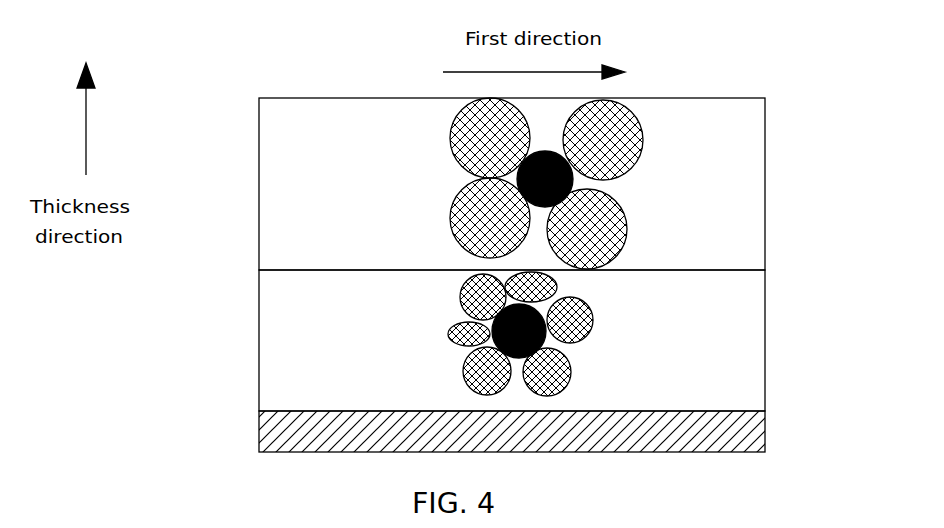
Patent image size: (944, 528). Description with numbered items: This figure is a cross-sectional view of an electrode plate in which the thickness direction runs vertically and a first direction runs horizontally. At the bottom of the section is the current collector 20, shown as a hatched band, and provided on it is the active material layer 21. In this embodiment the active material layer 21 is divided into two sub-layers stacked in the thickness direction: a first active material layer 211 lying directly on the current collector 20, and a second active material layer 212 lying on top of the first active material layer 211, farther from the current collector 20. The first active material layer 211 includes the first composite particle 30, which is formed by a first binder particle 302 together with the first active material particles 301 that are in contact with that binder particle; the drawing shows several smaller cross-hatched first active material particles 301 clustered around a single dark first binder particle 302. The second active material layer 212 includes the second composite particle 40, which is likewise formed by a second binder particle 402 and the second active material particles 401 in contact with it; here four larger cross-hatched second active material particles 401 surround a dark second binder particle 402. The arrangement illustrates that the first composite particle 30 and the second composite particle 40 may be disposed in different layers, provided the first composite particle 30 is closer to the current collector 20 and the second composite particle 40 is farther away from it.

The current collector 20 is at (280, 424).
The active material layer 21 is at (445, 254).
The first active material layer 211 is at (280, 302).
The second active material layer 212 is at (280, 234).
The first composite particle 30 is at (659, 334).
The first active material particle 301 is at (573, 317).
The first binder particle 302 is at (545, 345).
The second composite particle 40 is at (670, 183).
The second active material particle 401 is at (600, 152).
The second binder particle 402 is at (573, 180).